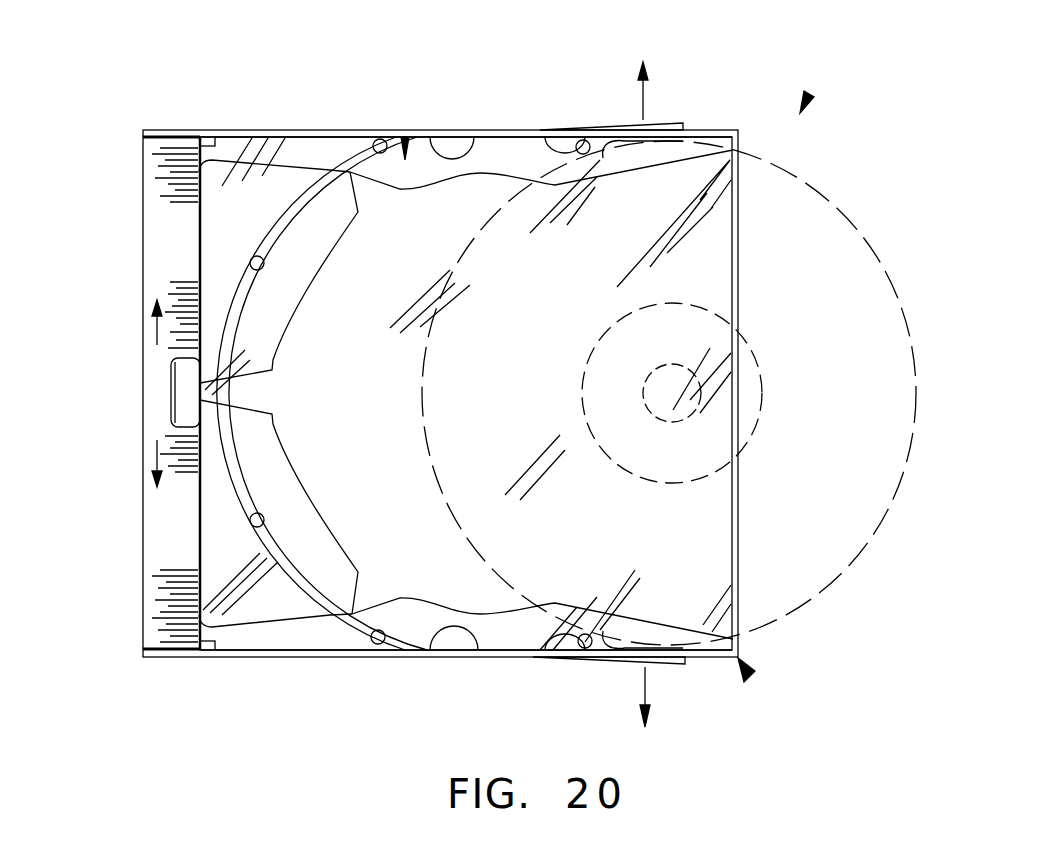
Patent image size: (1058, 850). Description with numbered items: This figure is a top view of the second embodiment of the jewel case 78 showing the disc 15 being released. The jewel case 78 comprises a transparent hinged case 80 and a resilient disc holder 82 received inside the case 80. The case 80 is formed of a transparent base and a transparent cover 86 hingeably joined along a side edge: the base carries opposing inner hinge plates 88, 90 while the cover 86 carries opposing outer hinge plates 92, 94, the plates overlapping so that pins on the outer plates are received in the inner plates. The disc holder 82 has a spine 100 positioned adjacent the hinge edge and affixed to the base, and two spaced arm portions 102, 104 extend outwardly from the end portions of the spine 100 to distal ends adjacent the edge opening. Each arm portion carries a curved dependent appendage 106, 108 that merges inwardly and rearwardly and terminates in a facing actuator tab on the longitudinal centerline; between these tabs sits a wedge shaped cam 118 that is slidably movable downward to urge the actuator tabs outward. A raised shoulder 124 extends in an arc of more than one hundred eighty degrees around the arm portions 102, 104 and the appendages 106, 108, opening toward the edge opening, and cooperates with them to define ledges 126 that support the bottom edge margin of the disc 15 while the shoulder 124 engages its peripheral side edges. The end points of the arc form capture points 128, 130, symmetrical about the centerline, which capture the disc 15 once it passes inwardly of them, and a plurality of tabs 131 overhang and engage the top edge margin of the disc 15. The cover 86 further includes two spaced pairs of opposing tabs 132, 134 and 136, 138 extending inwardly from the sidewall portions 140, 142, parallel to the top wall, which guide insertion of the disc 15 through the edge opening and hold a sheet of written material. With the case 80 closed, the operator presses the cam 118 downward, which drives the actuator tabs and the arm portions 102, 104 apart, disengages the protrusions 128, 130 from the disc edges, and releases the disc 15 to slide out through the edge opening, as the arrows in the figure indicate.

The disc 15 is at (806, 188).
The jewel case 78 is at (808, 91).
The hinged case 80 is at (156, 110).
The disc holder 82 is at (406, 130).
The cover 86 is at (750, 680).
The hinge plate 88 is at (213, 652).
The hinge plate 90 is at (211, 140).
The hinge plate 92 is at (182, 657).
The hinge plate 94 is at (178, 131).
The spine 100 is at (150, 187).
The arm portion 102 is at (298, 637).
The arm portion 104 is at (330, 154).
The curved dependent appendage 106 is at (250, 526).
The curved dependent appendage 108 is at (282, 225).
The wedge shaped cam 118 is at (170, 396).
The raised shoulder 124 is at (285, 345).
The ledge 126 is at (482, 173).
The capture point 128 is at (545, 655).
The capture point 130 is at (548, 130).
The tabs 131 is at (381, 139).
The tab 132 is at (672, 660).
The tab 134 is at (668, 140).
The tab 136 is at (460, 640).
The tab 138 is at (455, 150).
The sidewall portion 140 is at (333, 655).
The sidewall portion 142 is at (293, 135).